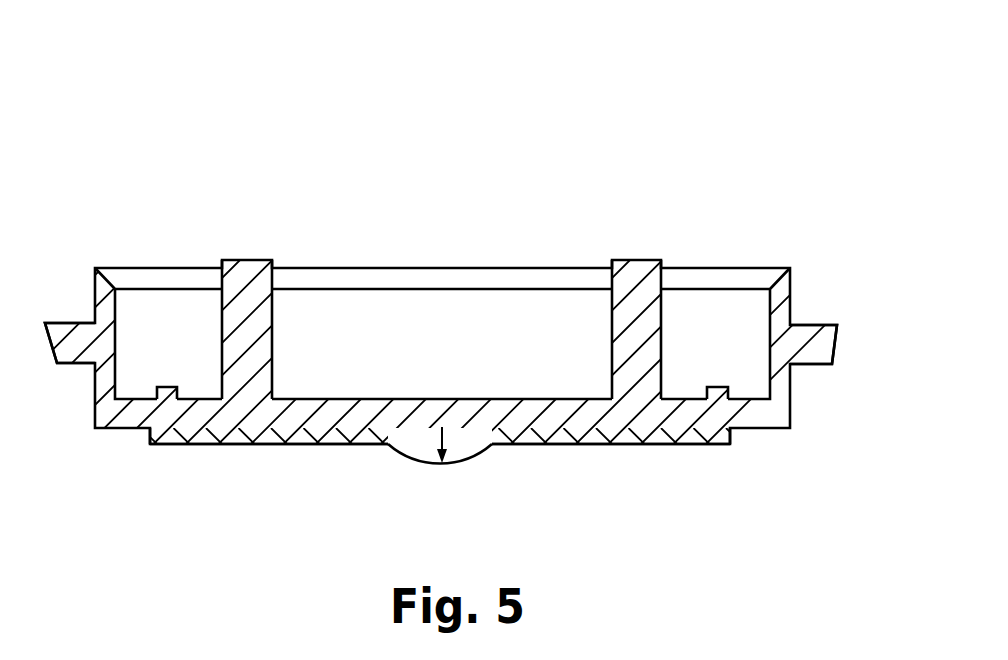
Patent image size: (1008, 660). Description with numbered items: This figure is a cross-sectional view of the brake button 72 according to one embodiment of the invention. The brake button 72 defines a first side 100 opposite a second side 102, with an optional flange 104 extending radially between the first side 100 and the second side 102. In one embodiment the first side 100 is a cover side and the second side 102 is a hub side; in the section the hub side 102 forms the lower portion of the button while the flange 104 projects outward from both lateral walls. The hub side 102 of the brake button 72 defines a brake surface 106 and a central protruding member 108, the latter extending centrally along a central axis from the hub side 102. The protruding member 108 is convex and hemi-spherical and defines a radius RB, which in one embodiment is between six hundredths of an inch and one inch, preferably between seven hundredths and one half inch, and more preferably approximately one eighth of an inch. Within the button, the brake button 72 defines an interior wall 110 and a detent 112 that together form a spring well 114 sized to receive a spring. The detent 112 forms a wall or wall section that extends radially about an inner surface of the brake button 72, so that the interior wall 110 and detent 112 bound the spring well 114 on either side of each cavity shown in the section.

The brake button 72 is at (515, 124).
The first side 100 is at (777, 268).
The second side 102 is at (760, 431).
The flange 104 is at (806, 325).
The brake surface 106 is at (696, 437).
The protruding member 108 is at (408, 458).
The interior wall 110 is at (273, 337).
The detent 112 is at (165, 385).
The spring well 114 is at (200, 372).
The radius RB is at (447, 437).